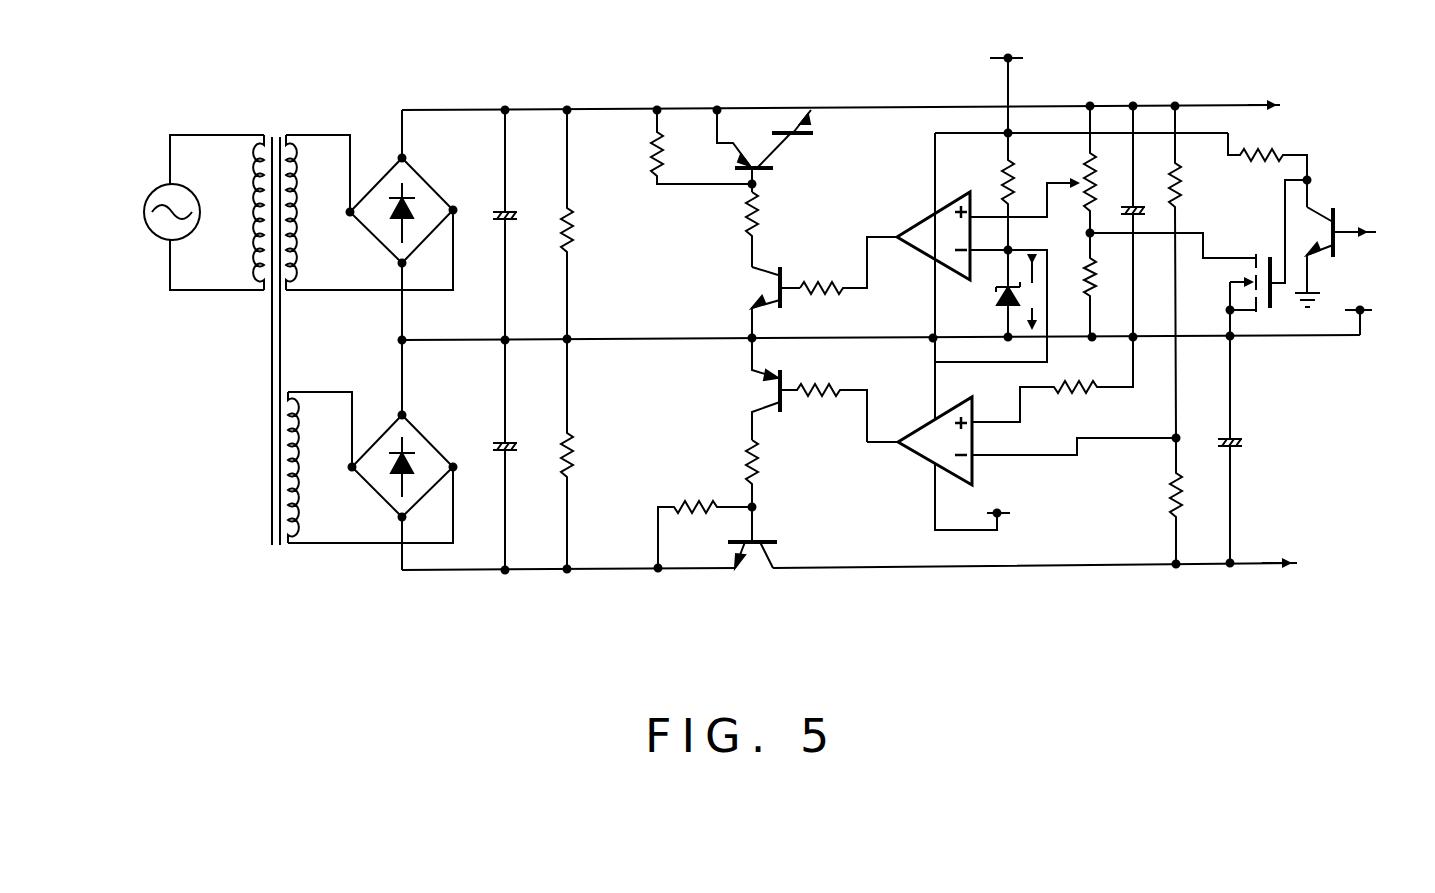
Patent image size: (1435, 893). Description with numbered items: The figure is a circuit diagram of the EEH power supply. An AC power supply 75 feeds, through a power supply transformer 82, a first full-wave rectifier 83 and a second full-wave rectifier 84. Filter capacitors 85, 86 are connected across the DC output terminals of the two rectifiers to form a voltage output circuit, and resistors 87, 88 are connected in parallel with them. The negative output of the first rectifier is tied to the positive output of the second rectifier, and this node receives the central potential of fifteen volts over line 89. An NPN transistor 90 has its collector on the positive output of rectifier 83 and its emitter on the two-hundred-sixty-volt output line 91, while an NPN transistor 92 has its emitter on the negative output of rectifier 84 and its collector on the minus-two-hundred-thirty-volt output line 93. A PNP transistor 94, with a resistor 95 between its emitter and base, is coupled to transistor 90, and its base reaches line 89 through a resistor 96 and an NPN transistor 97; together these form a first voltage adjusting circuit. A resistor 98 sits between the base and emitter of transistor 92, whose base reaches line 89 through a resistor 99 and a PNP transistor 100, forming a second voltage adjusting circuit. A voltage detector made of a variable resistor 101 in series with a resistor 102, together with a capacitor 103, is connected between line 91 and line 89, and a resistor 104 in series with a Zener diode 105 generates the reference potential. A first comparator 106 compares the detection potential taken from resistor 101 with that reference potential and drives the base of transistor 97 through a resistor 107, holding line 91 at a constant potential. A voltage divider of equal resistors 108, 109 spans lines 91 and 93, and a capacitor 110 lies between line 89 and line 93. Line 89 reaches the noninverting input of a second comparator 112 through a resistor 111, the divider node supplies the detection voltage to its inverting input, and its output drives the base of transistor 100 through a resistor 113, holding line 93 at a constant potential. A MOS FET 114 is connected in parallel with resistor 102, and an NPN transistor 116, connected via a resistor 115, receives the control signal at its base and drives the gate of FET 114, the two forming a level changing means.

The AC power supply 75 is at (146, 212).
The power supply transformer 82 is at (275, 133).
The first full-wave rectifier 83 is at (434, 202).
The second full-wave rectifier 84 is at (429, 446).
The filter capacitor 85 is at (515, 216).
The filter capacitor 86 is at (517, 446).
The resistor 87 is at (577, 232).
The resistor 88 is at (578, 460).
The line 89 is at (638, 336).
The NPN transistor 90 is at (791, 110).
The 260-V output line 91 is at (898, 104).
The NPN transistor 92 is at (756, 557).
The −230-V output line 93 is at (999, 566).
The PNP transistor 94 is at (778, 160).
The resistor 95 is at (652, 149).
The resistor 96 is at (760, 214).
The NPN transistor 97 is at (768, 290).
The resistor 98 is at (697, 502).
The resistor 99 is at (760, 468).
The PNP transistor 100 is at (760, 390).
The variable resistor 101 is at (1081, 176).
The resistor 102 is at (1098, 284).
The capacitor 103 is at (1136, 198).
The resistor 104 is at (998, 182).
The Zener diode 105 is at (1001, 296).
The first comparator 106 is at (920, 250).
The resistor 107 is at (804, 280).
The resistor 108 is at (1182, 193).
The resistor 109 is at (1170, 492).
The capacitor 110 is at (1243, 442).
The resistor 111 is at (1072, 394).
The second comparator 112 is at (920, 458).
The resistor 113 is at (820, 398).
The MOS FET 114 is at (1240, 242).
The resistor 115 is at (1262, 158).
The NPN transistor 116 is at (1325, 209).